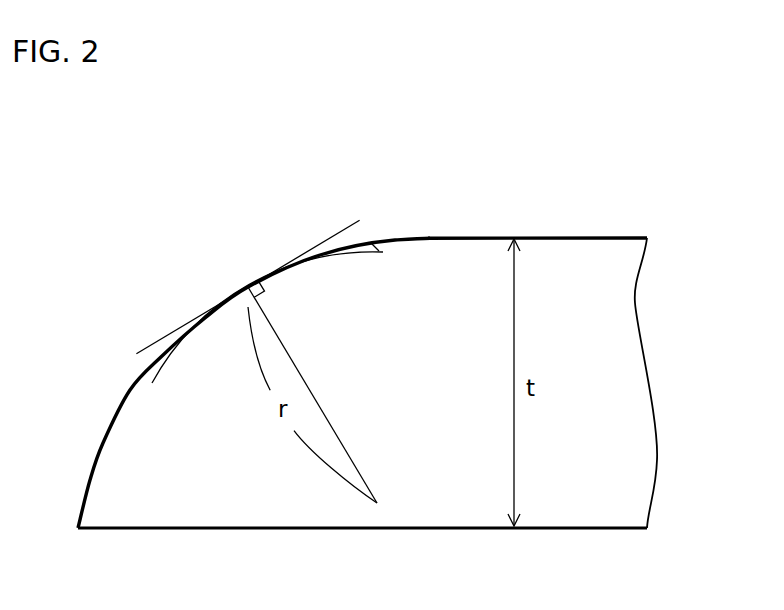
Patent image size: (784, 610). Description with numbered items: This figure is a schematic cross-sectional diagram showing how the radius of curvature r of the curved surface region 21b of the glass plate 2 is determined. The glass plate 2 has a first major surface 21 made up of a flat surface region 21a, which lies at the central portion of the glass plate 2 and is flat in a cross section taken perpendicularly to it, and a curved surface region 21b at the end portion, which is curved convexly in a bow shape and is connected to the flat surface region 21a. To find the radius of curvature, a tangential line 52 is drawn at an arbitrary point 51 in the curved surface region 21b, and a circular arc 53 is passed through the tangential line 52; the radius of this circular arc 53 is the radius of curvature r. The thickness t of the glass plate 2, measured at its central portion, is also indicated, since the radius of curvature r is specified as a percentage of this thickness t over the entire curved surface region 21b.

The glass plate 2 is at (585, 507).
The first major surface 21 is at (347, 351).
The flat surface region 21a is at (581, 238).
The curved surface region 21b is at (103, 440).
The arbitrary point 51 is at (248, 287).
The tangential line 52 is at (328, 242).
The circular arc 53 is at (375, 245).